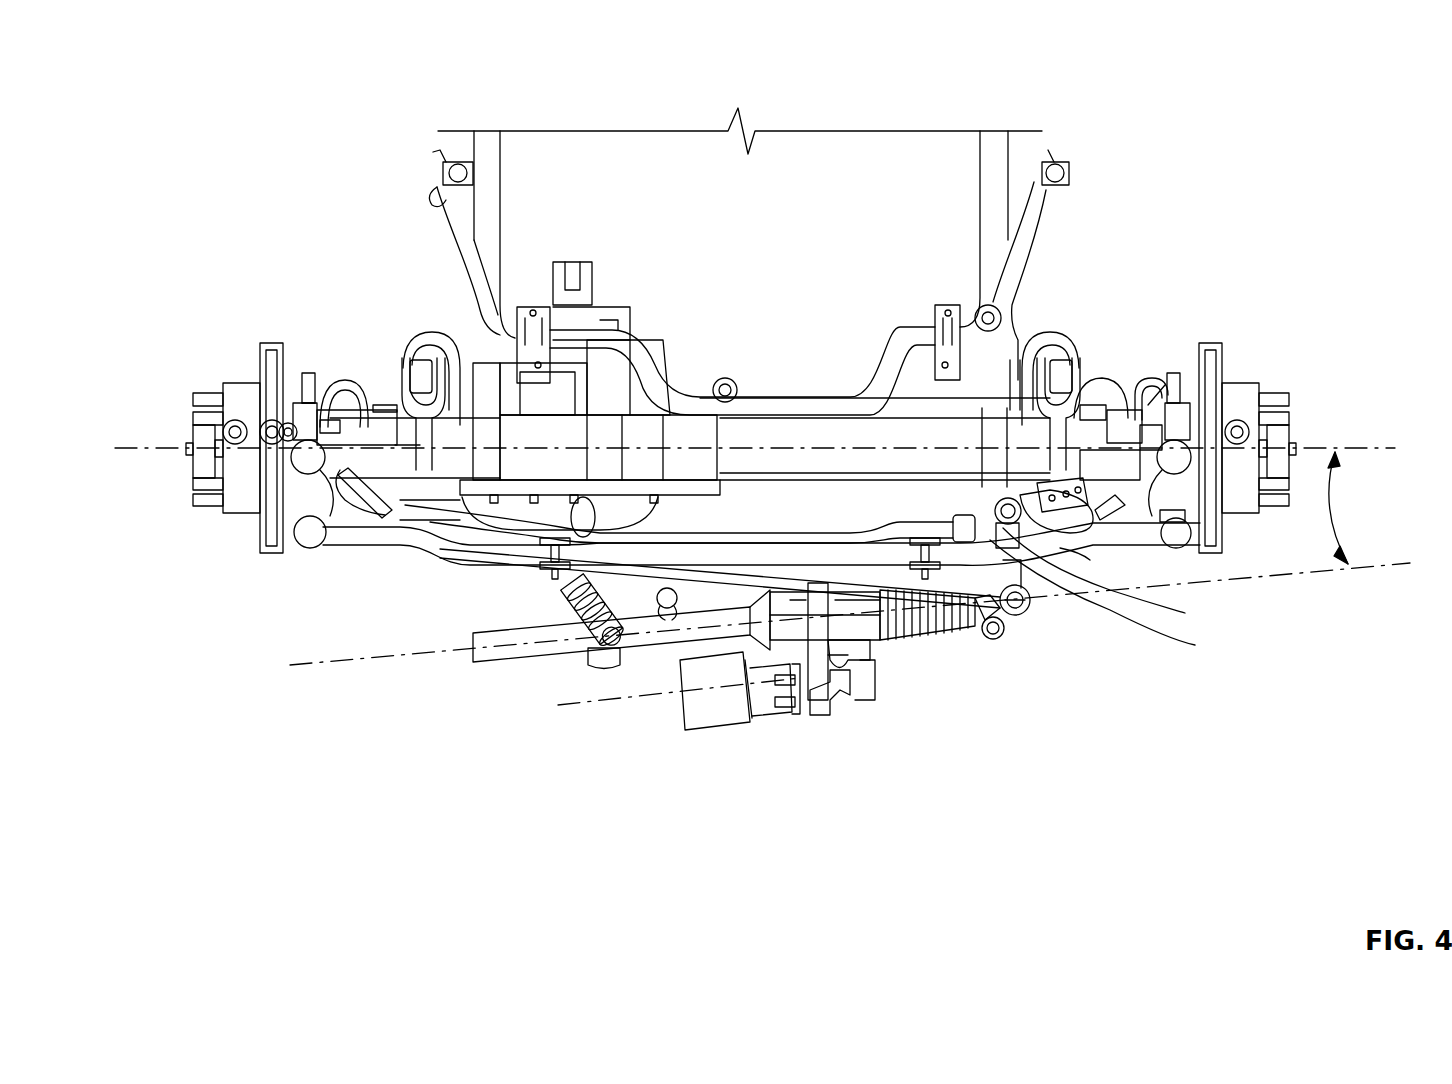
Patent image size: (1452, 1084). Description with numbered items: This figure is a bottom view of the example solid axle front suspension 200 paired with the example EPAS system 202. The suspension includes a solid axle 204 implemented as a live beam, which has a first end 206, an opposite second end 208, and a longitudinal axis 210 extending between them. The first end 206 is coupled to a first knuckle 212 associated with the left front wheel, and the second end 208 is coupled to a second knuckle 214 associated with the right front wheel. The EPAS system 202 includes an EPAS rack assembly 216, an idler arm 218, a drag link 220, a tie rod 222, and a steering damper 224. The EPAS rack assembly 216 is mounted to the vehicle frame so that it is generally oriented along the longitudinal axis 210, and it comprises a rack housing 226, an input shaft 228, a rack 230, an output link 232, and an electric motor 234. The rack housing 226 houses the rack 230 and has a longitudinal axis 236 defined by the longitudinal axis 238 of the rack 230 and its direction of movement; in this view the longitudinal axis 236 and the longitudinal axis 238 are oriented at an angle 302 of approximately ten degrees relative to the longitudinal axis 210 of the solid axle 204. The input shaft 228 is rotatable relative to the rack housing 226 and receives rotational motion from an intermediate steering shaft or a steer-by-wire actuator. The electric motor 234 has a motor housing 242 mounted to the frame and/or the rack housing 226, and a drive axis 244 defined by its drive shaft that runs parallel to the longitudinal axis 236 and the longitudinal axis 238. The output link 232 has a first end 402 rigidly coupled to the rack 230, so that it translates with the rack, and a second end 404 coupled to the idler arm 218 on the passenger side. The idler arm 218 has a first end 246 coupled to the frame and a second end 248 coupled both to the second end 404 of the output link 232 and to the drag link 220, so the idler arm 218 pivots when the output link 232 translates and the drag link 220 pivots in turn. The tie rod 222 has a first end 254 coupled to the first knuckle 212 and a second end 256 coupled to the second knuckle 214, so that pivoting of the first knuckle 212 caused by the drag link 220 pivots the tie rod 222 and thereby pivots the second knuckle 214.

The solid axle front suspension 200 is at (1292, 88).
The EPAS system 202 is at (636, 828).
The solid axle 204 is at (870, 435).
The first end 206 is at (365, 445).
The second end 208 is at (1122, 420).
The longitudinal axis 210 is at (1330, 450).
The first knuckle 212 is at (306, 375).
The second knuckle 214 is at (1176, 395).
The EPAS rack assembly 216 is at (636, 770).
The idler arm 218 is at (1185, 613).
The drag link 220 is at (737, 575).
The tie rod 222 is at (440, 560).
The steering damper 224 is at (940, 650).
The rack housing 226 is at (490, 665).
The input shaft 228 is at (555, 590).
The rack 230 is at (910, 632).
The output link 232 is at (1015, 632).
The electric motor 234 is at (696, 712).
The longitudinal axis 236 is at (850, 614).
The longitudinal axis 238 is at (1312, 572).
The motor housing 242 is at (745, 712).
The drive axis 244 is at (565, 708).
The first end 246 is at (1080, 558).
The second end 248 is at (1195, 645).
The first end 254 is at (330, 535).
The second end 256 is at (1160, 548).
The angle 302 is at (1340, 510).
The first end 402 is at (990, 655).
The second end 404 is at (1035, 602).